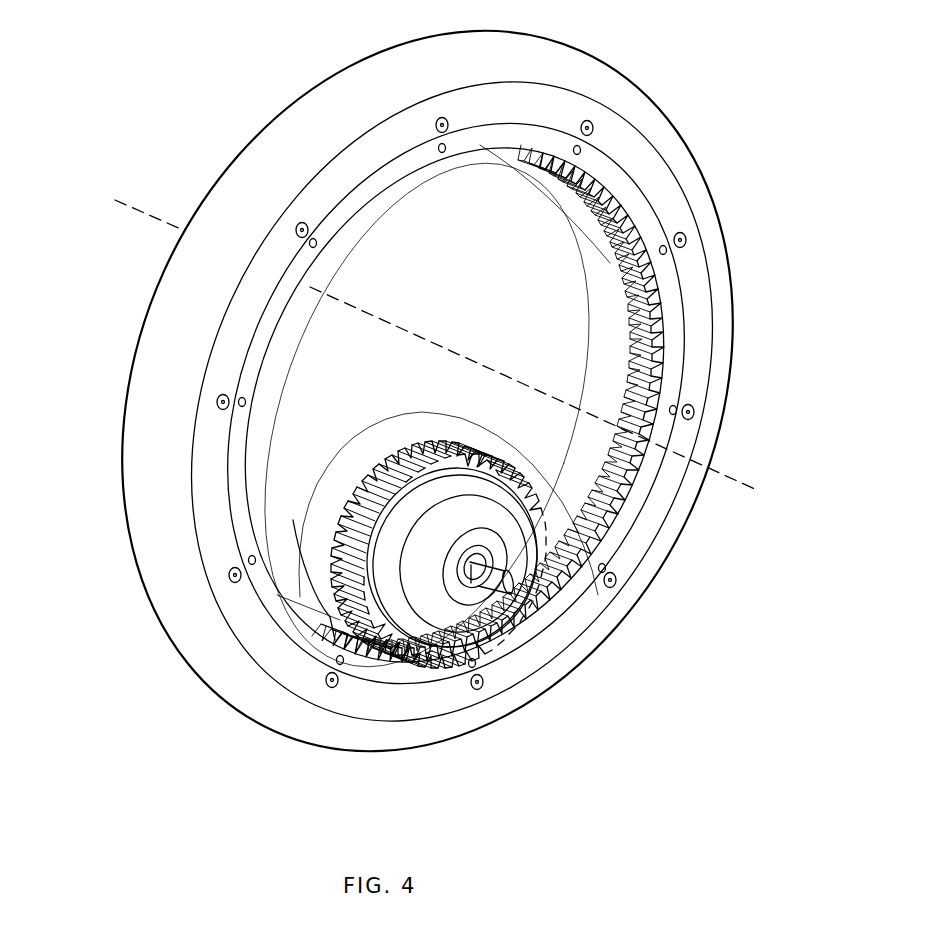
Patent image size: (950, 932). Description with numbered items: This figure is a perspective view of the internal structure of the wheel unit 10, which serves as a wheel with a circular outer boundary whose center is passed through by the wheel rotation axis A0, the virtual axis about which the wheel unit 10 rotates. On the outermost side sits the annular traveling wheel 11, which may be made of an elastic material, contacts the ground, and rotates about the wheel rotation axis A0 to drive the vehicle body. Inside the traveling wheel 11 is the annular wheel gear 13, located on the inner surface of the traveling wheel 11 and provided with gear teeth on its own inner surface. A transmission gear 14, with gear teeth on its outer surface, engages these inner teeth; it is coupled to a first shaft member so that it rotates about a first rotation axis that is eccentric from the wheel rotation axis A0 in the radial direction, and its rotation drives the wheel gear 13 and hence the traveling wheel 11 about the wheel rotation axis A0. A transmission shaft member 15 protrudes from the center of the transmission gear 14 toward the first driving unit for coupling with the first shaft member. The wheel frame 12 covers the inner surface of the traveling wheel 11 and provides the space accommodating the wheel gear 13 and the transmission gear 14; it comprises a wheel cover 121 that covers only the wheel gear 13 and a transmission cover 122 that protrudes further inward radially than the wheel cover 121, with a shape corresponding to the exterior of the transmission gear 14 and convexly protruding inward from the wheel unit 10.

The wheel unit 10 is at (131, 52).
The traveling wheel 11 is at (127, 321).
The wheel frame 12 is at (571, 291).
The wheel cover 121 is at (543, 190).
The transmission cover 122 is at (337, 467).
The wheel gear 13 is at (335, 640).
The transmission gear 14 is at (376, 468).
The transmission shaft member 15 is at (517, 583).
The wheel rotation axis A0 is at (454, 352).